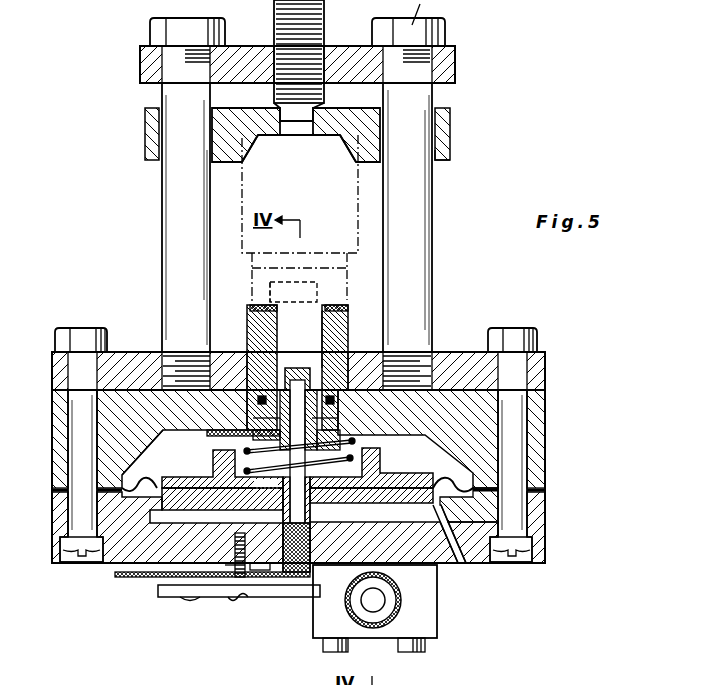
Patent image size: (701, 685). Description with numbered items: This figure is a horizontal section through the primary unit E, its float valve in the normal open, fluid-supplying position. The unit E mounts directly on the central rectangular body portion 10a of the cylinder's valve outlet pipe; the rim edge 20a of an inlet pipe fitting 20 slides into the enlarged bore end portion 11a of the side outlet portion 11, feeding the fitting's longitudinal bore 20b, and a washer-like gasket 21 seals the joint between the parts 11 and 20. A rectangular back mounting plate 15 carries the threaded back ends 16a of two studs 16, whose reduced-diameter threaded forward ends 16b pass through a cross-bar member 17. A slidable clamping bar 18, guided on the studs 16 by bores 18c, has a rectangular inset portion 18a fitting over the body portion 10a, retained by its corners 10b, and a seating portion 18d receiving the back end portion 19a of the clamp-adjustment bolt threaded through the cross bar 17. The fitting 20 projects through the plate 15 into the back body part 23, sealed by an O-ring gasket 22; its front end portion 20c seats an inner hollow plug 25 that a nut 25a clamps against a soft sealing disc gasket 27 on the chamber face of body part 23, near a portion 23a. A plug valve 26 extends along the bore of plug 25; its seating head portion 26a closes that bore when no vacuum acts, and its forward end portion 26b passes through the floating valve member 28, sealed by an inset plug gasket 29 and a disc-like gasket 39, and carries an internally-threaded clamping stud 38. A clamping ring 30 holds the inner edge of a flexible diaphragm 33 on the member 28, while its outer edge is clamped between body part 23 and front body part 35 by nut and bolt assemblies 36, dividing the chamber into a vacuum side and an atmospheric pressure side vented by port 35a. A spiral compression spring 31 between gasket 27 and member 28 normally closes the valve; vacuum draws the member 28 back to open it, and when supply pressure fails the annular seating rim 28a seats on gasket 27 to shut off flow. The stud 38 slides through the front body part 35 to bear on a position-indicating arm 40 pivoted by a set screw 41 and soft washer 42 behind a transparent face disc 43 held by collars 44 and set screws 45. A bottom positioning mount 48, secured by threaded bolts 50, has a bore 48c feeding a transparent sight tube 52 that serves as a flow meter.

The central rectangular body portion 10a is at (360, 190).
The top and bottom corners 10b is at (338, 150).
The side outlet portion 11 is at (345, 288).
The enlarged bore outlet end portion 11a is at (342, 275).
The back mounting plate 15 is at (140, 352).
The end-threaded studs 16 is at (162, 188).
The threaded back ends 16a is at (210, 364).
The threaded forward ends 16b is at (423, 73).
The cross-bar member 17 is at (453, 58).
The slidable clamping bar 18 is at (452, 126).
The inset portion 18a is at (252, 147).
The holes or bores 18c is at (433, 152).
The offset seating portion 18d is at (290, 134).
The tapered back end portion 19a is at (284, 117).
The inlet pipe fitting 20 is at (250, 316).
The backwardly-projecting rim edge 20a is at (318, 302).
The longitudinal bore 20b is at (323, 330).
The extreme front end portion 20c is at (257, 418).
The washer-like gasket 21 is at (338, 306).
The O-ring sealing gasket 22 is at (340, 400).
The back body part 23 is at (540, 420).
The body shoulder 23a is at (340, 417).
The inner hollow plug 25 is at (258, 400).
The nut 25a is at (372, 449).
The plug valve 26 is at (315, 365).
The seating head portion 26a is at (295, 390).
The reduced-diameter forward end portion 26b is at (316, 494).
The soft sealing disc gasket 27 is at (202, 438).
The floating valve member 28 is at (431, 474).
The annular seating rim 28a is at (381, 463).
The inset plug gasket 29 is at (284, 486).
The clamping ring 30 is at (163, 511).
The spiral compression spring 31 is at (230, 443).
The flexible diaphragm 33 is at (464, 480).
The front body part 35 is at (52, 513).
The port 35a is at (461, 565).
The nut and bolt assemblies 36 is at (72, 553).
The internally-threaded stud 38 is at (311, 538).
The disc-like gasket 39 is at (284, 518).
The position-indicating arm 40 is at (123, 578).
The set screw 41 is at (234, 545).
The soft washer 42 is at (232, 564).
The face disc 43 is at (177, 598).
The collars 44 is at (223, 587).
The set screws 45 is at (244, 602).
The bottom positioning mount 48 is at (436, 600).
The passageway-defining bore 48c is at (368, 610).
The threaded bolts 50 is at (422, 653).
The sight tube 52 is at (350, 612).
The primary unit E is at (50, 422).